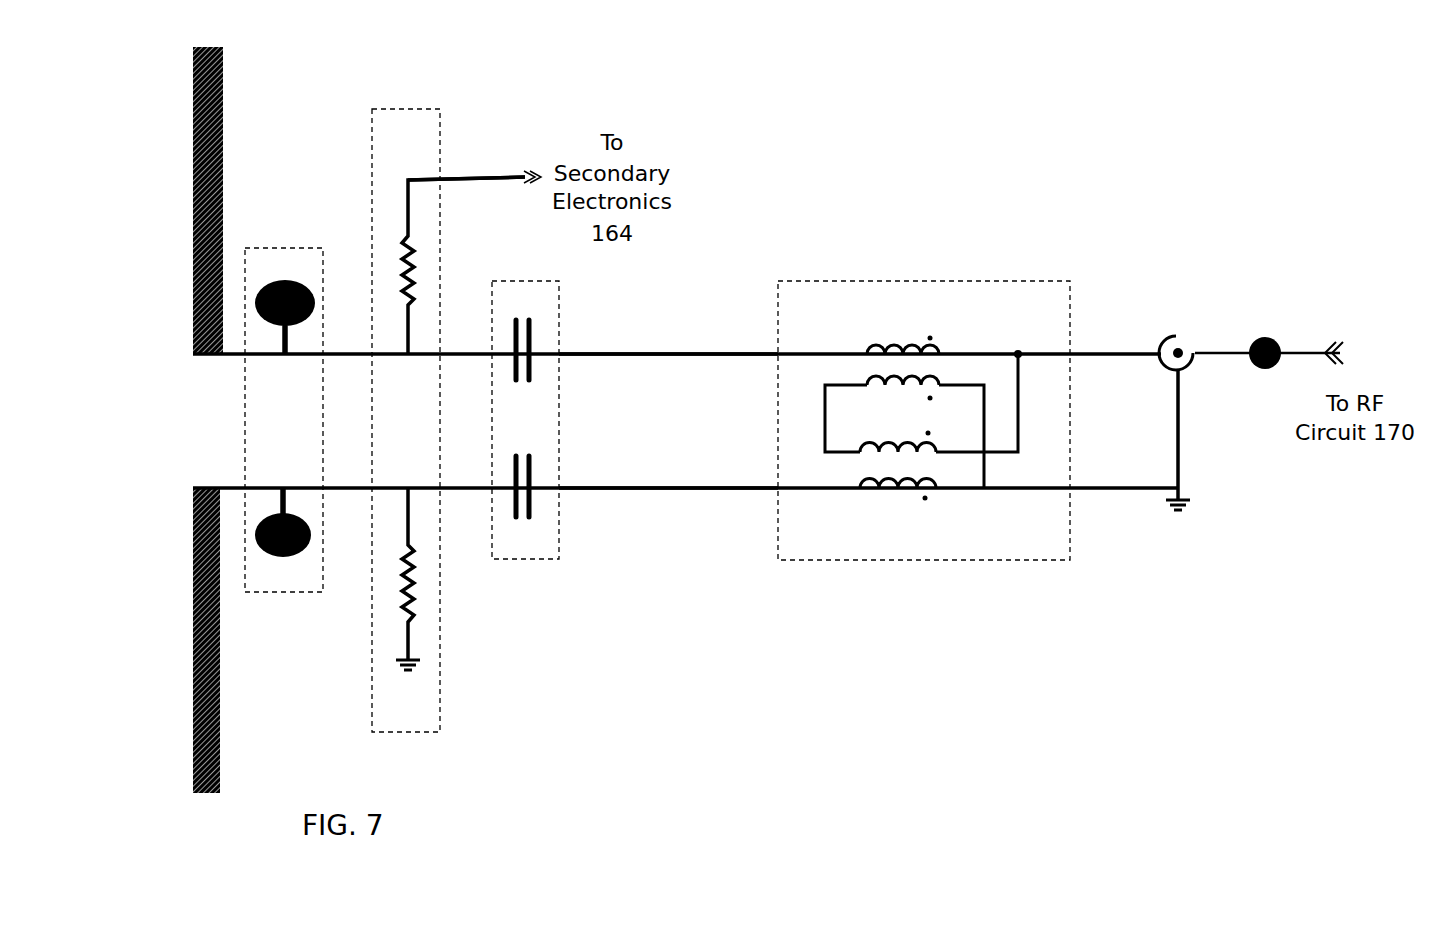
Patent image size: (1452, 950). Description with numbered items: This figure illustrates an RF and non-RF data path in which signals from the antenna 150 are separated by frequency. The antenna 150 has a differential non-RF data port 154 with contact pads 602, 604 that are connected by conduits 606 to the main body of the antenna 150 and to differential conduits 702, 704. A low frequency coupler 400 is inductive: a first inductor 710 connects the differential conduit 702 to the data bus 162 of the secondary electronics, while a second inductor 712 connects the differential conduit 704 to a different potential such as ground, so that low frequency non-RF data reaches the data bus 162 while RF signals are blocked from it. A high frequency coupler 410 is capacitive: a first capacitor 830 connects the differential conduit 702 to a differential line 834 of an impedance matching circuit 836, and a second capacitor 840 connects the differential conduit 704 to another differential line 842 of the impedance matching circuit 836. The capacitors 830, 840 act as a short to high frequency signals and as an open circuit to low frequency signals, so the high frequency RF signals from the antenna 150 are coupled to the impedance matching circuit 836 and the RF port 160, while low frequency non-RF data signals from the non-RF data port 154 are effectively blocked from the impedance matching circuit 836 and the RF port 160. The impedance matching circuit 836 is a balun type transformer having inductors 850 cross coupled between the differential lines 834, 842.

The antenna 150 is at (193, 112).
The differential non-RF data port 154 is at (295, 248).
The RF port 160 is at (1263, 338).
The data bus 162 is at (498, 176).
The low frequency coupler 400 is at (418, 109).
The high frequency coupler 410 is at (538, 281).
The contact pad 602 is at (258, 300).
The contact pad 604 is at (193, 542).
The conduits 606 is at (280, 340).
The differential conduit 702 is at (335, 356).
The differential conduit 704 is at (335, 490).
The first inductor 710 is at (412, 245).
The second inductor 712 is at (416, 605).
The first capacitor 830 is at (533, 338).
The differential line 834 is at (640, 357).
The impedance matching circuit 836 is at (972, 223).
The second capacitor 840 is at (533, 470).
The differential line 842 is at (637, 490).
The inductors 850 is at (905, 345).